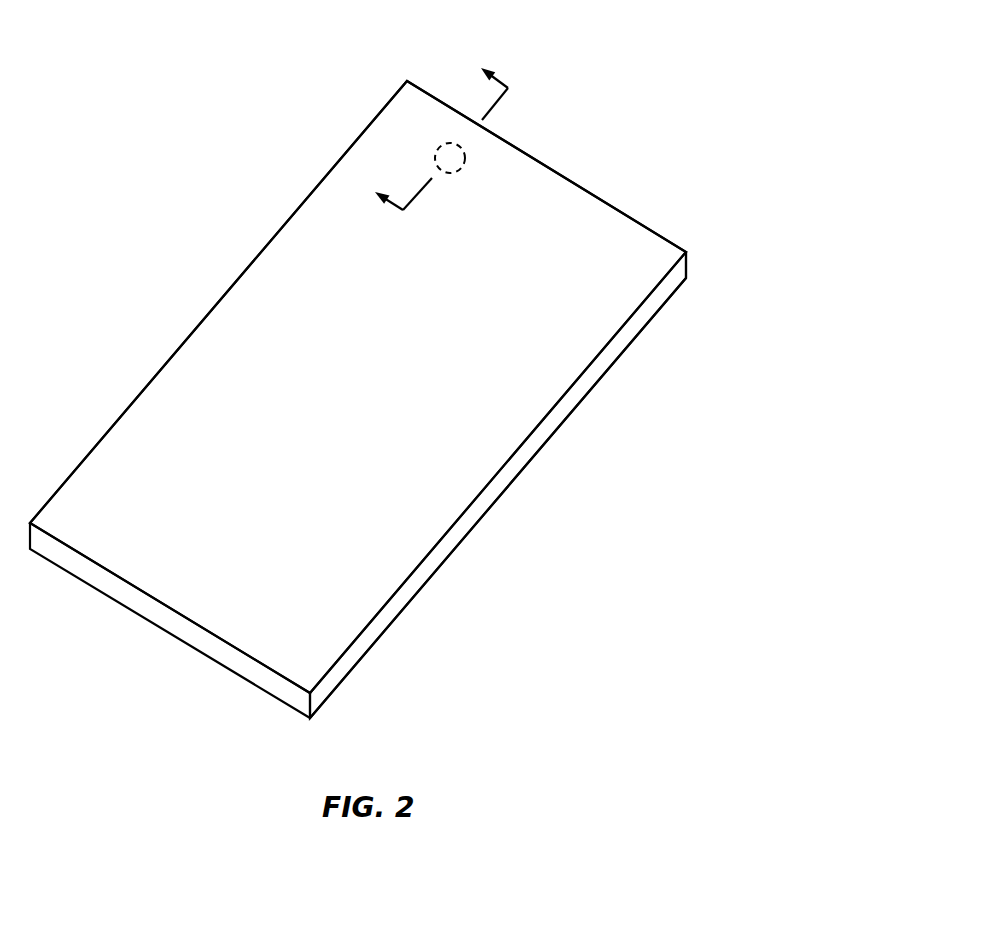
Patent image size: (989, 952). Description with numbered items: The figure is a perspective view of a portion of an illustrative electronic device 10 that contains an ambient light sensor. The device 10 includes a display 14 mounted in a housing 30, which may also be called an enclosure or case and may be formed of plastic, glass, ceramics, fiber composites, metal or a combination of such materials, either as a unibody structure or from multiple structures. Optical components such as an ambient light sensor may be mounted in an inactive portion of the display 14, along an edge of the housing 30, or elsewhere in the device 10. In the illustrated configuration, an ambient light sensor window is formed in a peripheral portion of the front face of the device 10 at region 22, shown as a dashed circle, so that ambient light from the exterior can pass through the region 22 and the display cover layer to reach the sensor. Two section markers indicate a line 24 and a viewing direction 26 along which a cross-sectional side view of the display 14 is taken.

The electronic device 10 is at (701, 141).
The display 14 is at (261, 306).
The region 22 is at (462, 166).
The line 24 is at (500, 104).
The direction 26 is at (502, 82).
The housing 30 is at (585, 382).